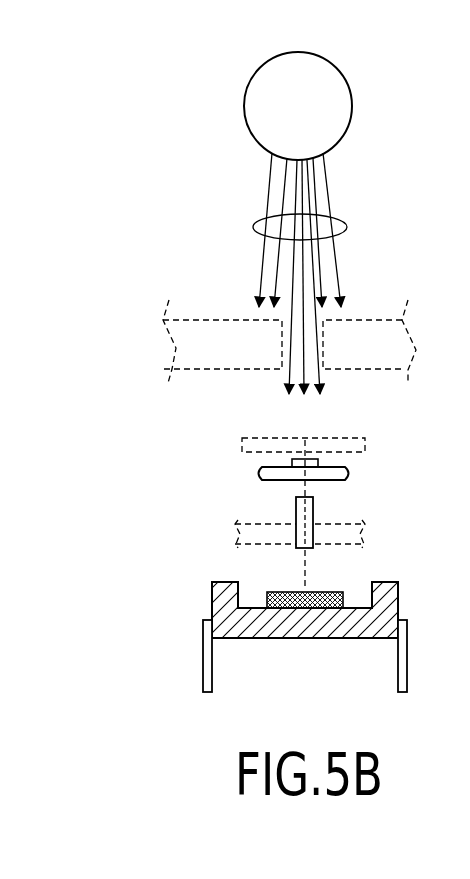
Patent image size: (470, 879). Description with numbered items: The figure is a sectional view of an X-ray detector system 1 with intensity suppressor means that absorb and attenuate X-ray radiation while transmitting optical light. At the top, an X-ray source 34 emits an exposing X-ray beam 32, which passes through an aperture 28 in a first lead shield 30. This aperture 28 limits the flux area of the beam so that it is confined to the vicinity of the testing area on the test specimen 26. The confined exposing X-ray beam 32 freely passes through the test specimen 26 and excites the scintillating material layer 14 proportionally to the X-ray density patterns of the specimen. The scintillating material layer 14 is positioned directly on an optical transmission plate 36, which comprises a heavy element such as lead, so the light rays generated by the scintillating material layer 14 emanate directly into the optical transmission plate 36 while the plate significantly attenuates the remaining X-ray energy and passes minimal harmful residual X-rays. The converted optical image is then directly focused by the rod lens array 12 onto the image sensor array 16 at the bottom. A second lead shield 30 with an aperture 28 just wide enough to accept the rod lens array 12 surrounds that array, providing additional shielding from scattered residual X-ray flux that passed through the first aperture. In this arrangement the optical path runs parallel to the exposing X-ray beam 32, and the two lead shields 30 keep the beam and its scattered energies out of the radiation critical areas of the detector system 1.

The X-ray detector system 1 is at (165, 91).
The X-ray source 34 is at (345, 76).
The exposing X-ray beam 32 is at (347, 227).
The lead shield 30 is at (210, 319).
The aperture 28 is at (319, 367).
The test specimen 26 is at (255, 438).
The optical transmission plate 36 is at (270, 461).
The scintillating material layer 14 is at (320, 461).
The rod lens array 12 is at (313, 506).
The image sensor array 16 is at (275, 592).